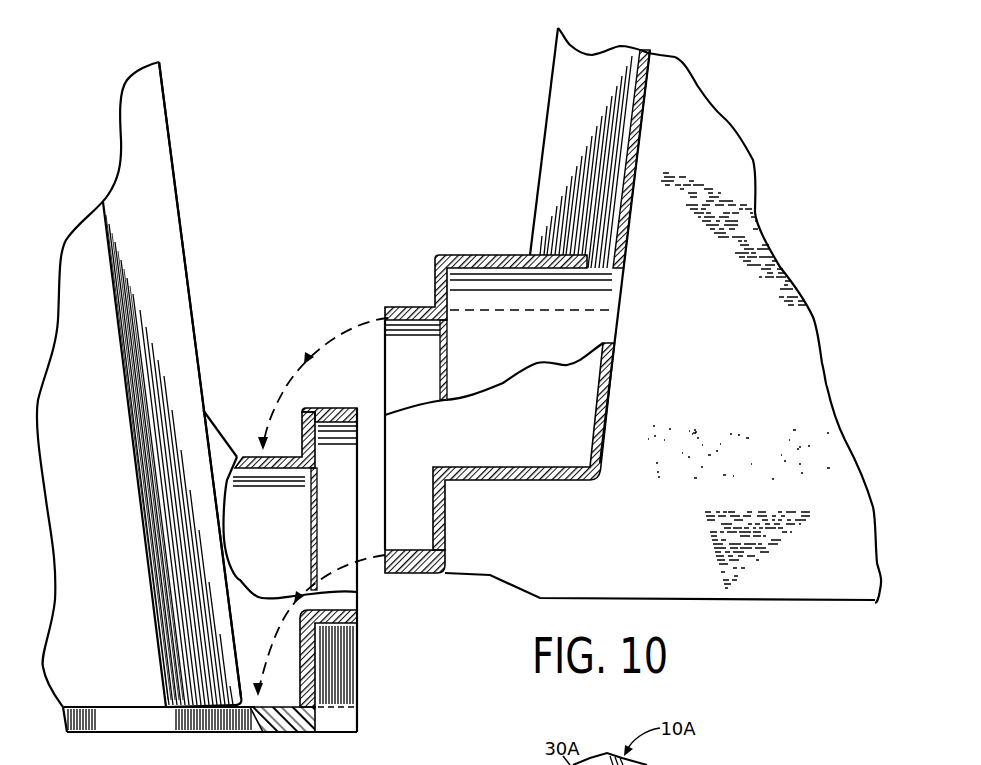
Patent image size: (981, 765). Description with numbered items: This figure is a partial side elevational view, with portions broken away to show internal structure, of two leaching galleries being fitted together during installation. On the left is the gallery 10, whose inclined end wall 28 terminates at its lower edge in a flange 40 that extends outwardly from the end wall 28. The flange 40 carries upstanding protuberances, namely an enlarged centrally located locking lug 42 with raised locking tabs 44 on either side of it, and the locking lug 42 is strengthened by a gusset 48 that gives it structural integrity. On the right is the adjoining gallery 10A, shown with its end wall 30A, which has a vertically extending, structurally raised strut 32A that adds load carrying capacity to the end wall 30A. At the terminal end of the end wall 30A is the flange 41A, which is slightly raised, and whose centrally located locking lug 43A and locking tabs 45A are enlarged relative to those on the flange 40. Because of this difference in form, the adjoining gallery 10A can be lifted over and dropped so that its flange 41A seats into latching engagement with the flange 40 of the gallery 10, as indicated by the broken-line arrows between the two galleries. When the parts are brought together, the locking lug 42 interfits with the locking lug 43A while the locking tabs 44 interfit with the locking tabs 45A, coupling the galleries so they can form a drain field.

The gallery 10 is at (182, 173).
The inclined end wall 28 is at (115, 267).
The gusset 48 is at (218, 427).
The locking lug 42 is at (323, 414).
The locking tabs 44 is at (313, 643).
The flange 40 is at (290, 720).
The adjoining gallery 10A is at (655, 40).
The strut 32A is at (557, 125).
The end wall 30A is at (635, 90).
The locking lug 43A is at (480, 256).
The locking tabs 45A is at (555, 472).
The flange 41A is at (417, 567).